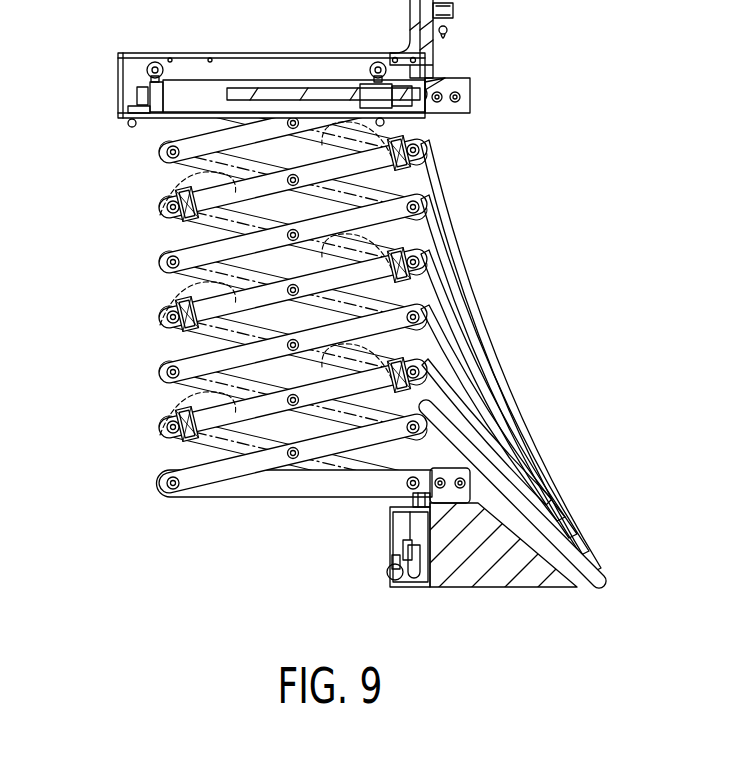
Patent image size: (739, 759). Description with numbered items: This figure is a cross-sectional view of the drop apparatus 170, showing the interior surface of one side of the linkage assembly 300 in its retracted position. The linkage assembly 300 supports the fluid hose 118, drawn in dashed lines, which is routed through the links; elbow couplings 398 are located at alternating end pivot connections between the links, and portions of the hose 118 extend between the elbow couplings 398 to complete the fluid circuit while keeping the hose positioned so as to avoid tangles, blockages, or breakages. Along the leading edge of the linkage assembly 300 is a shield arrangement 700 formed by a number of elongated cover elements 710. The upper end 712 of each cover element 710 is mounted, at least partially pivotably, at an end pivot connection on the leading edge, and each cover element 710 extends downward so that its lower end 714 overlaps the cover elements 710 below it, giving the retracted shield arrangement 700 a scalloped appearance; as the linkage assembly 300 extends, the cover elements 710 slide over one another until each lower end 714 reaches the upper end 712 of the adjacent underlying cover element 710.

The fluid hose 118 is at (178, 195).
The drop apparatus 170 is at (118, 265).
The linkage assembly 300 is at (164, 146).
The elbow coupling 398 is at (180, 217).
The shield arrangement 700 is at (580, 240).
The cover element 710 is at (464, 198).
The upper end 712 is at (445, 157).
The lower end 714 is at (527, 457).